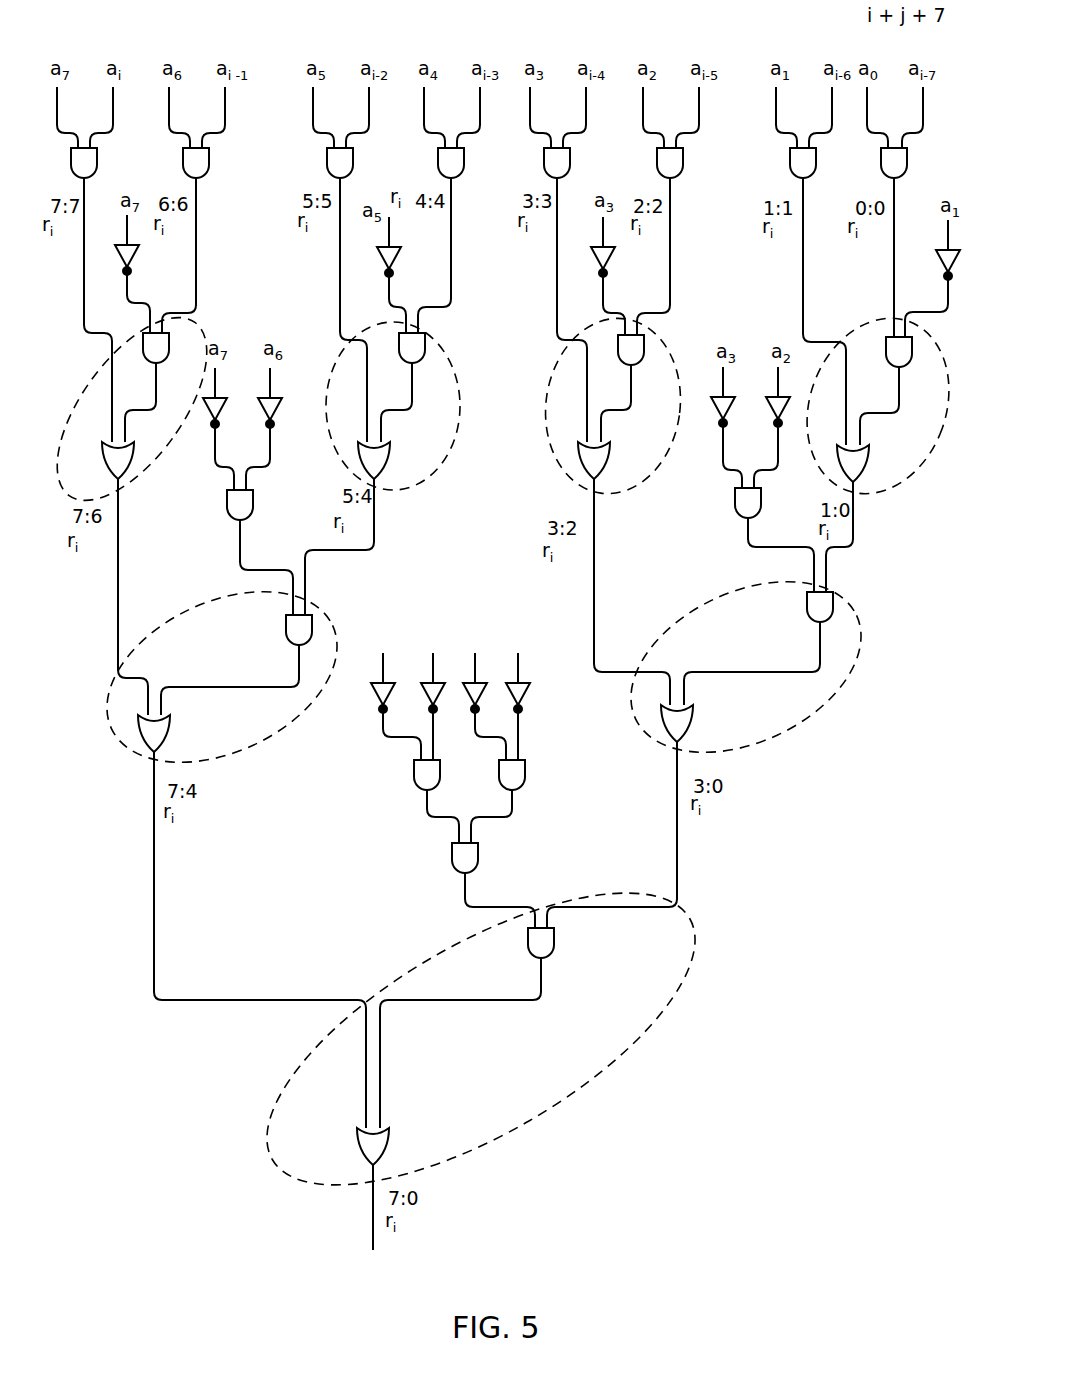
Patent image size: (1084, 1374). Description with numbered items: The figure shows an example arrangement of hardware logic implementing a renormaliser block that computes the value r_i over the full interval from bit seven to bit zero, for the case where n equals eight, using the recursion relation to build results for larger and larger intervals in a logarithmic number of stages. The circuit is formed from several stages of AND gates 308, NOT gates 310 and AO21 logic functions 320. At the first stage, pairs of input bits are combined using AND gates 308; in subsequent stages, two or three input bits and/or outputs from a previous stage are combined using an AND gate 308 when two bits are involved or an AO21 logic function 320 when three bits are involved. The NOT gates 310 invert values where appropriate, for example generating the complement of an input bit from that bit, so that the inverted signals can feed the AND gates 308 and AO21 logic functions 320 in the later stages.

The AND gates 308 is at (480, 862).
The NOT gates 310 is at (529, 692).
The AO21 logic functions 320 is at (678, 985).